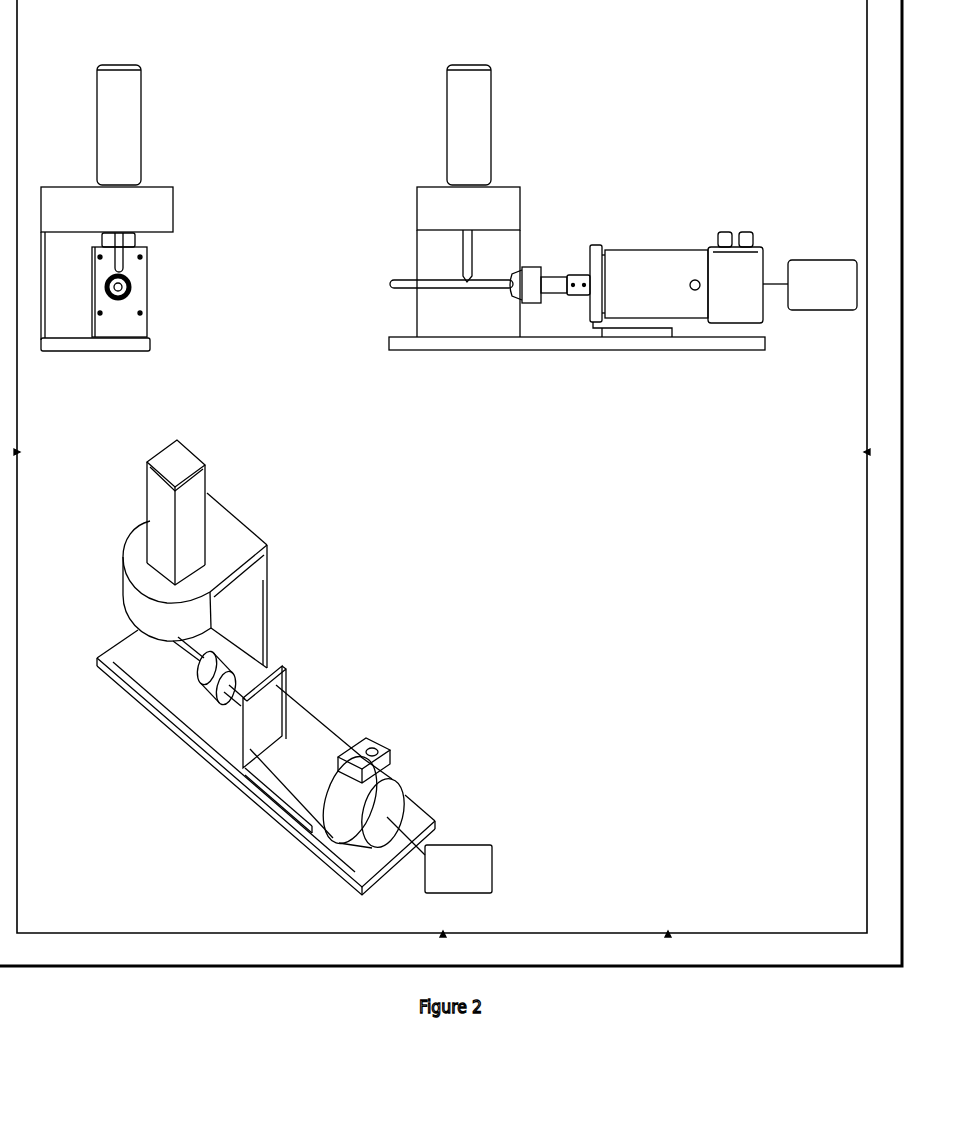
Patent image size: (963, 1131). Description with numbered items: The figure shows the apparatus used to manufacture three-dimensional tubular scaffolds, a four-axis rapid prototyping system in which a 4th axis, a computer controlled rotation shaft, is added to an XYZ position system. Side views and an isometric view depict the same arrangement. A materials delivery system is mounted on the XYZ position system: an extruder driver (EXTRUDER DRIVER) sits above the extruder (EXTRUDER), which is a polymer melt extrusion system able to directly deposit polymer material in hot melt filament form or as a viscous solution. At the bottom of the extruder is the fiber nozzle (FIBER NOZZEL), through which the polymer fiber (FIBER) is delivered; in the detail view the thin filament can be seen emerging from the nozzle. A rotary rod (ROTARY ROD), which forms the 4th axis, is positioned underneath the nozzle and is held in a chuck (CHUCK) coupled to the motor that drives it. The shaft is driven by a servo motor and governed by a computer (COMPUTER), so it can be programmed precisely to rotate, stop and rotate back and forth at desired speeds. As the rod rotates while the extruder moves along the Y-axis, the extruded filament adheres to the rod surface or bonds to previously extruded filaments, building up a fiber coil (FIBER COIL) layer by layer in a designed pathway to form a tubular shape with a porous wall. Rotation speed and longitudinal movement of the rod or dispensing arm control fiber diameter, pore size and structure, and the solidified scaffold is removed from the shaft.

The fiber nozzle FIBER NOZZEL is at (147, 254).
The fiber FIBER is at (130, 283).
The extruder driver EXTRUDER DRIVER is at (492, 90).
The extruder EXTRUDER is at (507, 185).
The rotary rod ROTARY ROD is at (490, 280).
The chuck CHUCK is at (524, 267).
The element 4th axis is at (351, 290).
The fiber coil FIBER COIL is at (331, 311).
The computer COMPUTER is at (622, 576).